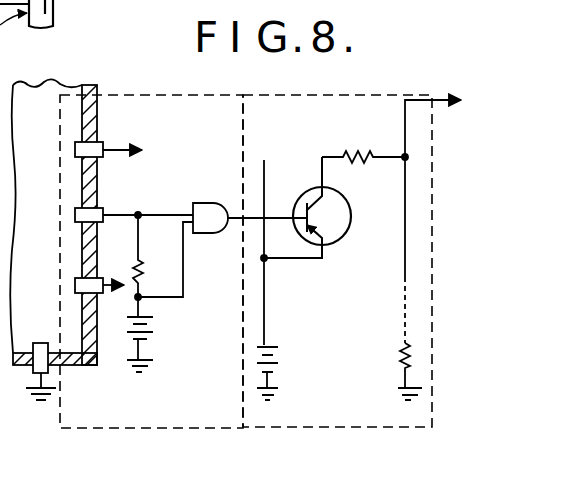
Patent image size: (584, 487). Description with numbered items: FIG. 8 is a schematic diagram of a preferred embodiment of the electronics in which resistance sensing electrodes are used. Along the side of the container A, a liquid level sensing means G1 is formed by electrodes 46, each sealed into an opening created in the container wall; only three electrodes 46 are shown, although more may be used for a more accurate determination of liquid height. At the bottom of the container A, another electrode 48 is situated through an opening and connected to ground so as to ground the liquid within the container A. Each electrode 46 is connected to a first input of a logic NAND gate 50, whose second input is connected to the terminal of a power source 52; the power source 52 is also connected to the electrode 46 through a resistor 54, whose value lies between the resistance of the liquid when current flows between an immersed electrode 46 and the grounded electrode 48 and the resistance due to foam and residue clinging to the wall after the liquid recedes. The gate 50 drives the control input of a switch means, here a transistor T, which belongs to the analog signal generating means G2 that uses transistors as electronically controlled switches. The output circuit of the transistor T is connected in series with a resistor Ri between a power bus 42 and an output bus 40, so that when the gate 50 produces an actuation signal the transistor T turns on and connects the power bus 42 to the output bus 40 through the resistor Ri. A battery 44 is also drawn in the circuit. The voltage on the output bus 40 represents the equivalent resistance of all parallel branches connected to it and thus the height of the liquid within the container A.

The container A is at (89, 80).
The liquid level sensing means G1 is at (129, 92).
The analog signal generating means G2 is at (370, 91).
The electrode 46 is at (103, 141).
The electrode 48 is at (34, 343).
The logic NAND gate 50 is at (218, 204).
The power source 52 is at (150, 339).
The resistor 54 is at (143, 276).
The power bus 42 is at (264, 178).
The battery 44 is at (270, 373).
The resistor Ri is at (372, 155).
The transistor T is at (346, 238).
The output bus 40 is at (407, 251).